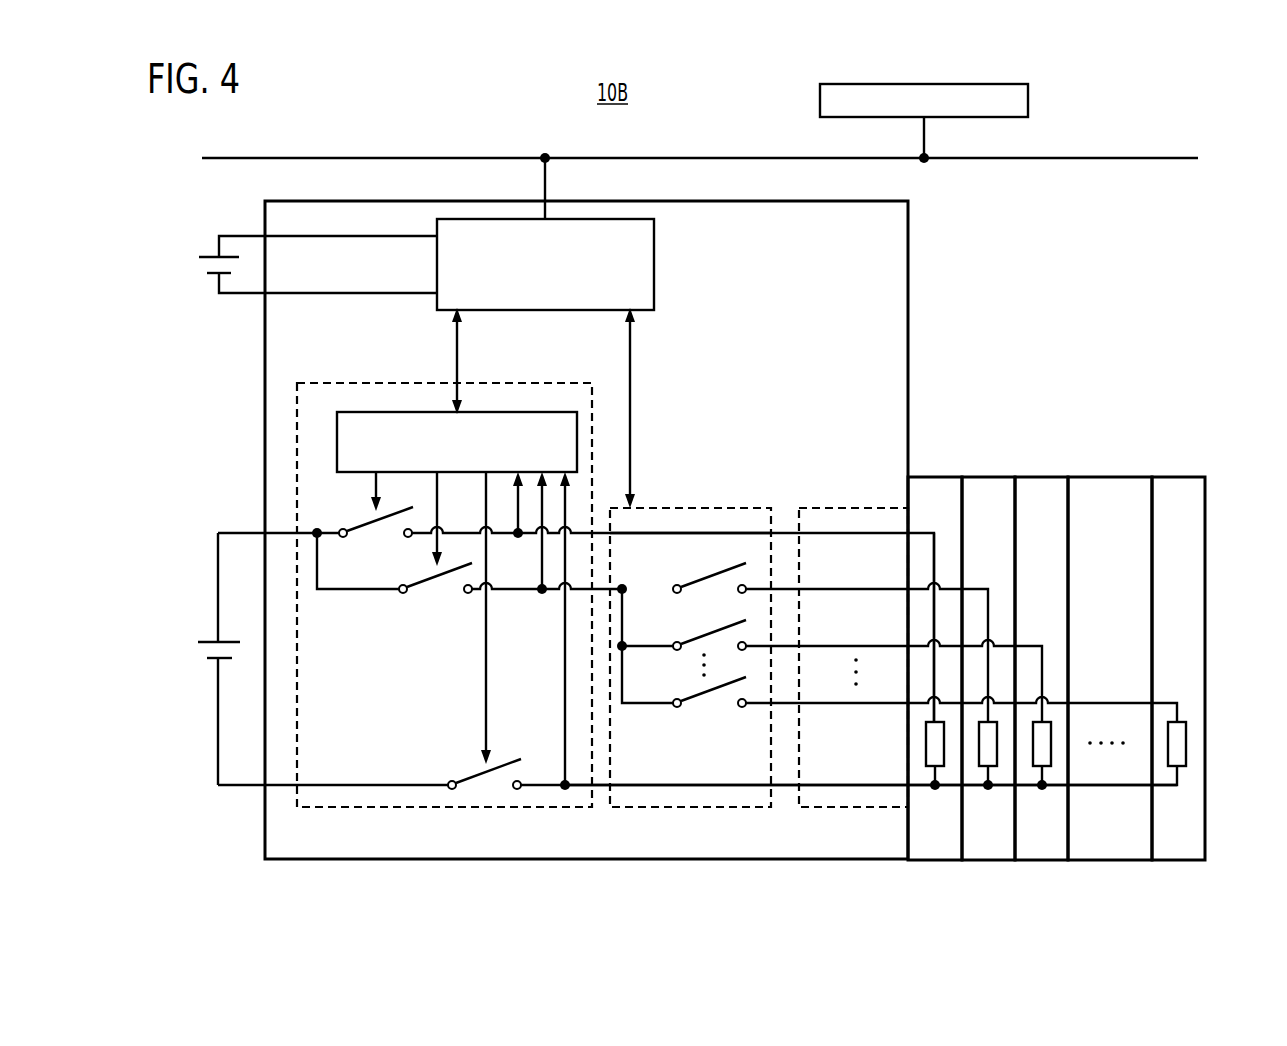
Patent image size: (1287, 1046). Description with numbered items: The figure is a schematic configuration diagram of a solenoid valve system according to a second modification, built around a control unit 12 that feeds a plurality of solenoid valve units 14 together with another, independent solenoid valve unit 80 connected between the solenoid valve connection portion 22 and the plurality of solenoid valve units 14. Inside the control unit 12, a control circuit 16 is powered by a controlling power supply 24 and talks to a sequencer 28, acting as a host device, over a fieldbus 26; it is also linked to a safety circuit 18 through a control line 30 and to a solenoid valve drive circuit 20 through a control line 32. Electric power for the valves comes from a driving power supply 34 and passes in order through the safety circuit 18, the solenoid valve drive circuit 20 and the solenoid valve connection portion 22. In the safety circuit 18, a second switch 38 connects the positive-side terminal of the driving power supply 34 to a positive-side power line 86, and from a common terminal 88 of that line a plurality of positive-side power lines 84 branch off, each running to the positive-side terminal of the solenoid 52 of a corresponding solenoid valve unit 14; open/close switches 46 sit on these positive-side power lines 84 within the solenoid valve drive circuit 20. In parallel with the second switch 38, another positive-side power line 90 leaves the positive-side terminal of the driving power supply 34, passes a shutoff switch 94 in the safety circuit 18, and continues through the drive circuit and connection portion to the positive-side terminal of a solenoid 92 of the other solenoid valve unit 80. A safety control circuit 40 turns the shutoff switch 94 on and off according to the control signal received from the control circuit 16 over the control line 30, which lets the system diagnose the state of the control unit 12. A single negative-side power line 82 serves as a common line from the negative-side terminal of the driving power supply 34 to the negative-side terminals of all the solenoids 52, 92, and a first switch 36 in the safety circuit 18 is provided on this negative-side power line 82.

The control unit 12 is at (908, 255).
The solenoid valve units 14 is at (990, 473).
The control circuit 16 is at (654, 262).
The safety circuit 18 is at (372, 380).
The solenoid valve drive circuit 20 is at (661, 508).
The solenoid valve connection portion 22 is at (804, 508).
The controlling power supply 24 is at (205, 258).
The fieldbus 26 is at (694, 156).
The sequencer 28 is at (1028, 100).
The control line 30 is at (458, 340).
The control line 32 is at (631, 360).
The driving power supply 34 is at (205, 646).
The first switch 36 is at (485, 790).
The second switch 38 is at (438, 592).
The safety control circuit 40 is at (522, 412).
The open/close switches 46 is at (712, 593).
The solenoids 52 is at (1186, 742).
The solenoid valve unit 80 is at (935, 473).
The negative-side power line 82 is at (722, 795).
The positive-side power lines 84 is at (845, 588).
The positive-side power line 86 is at (505, 592).
The common terminal 88 is at (626, 584).
The positive-side power line 90 is at (726, 531).
The solenoid 92 is at (926, 756).
The shutoff switch 94 is at (378, 532).